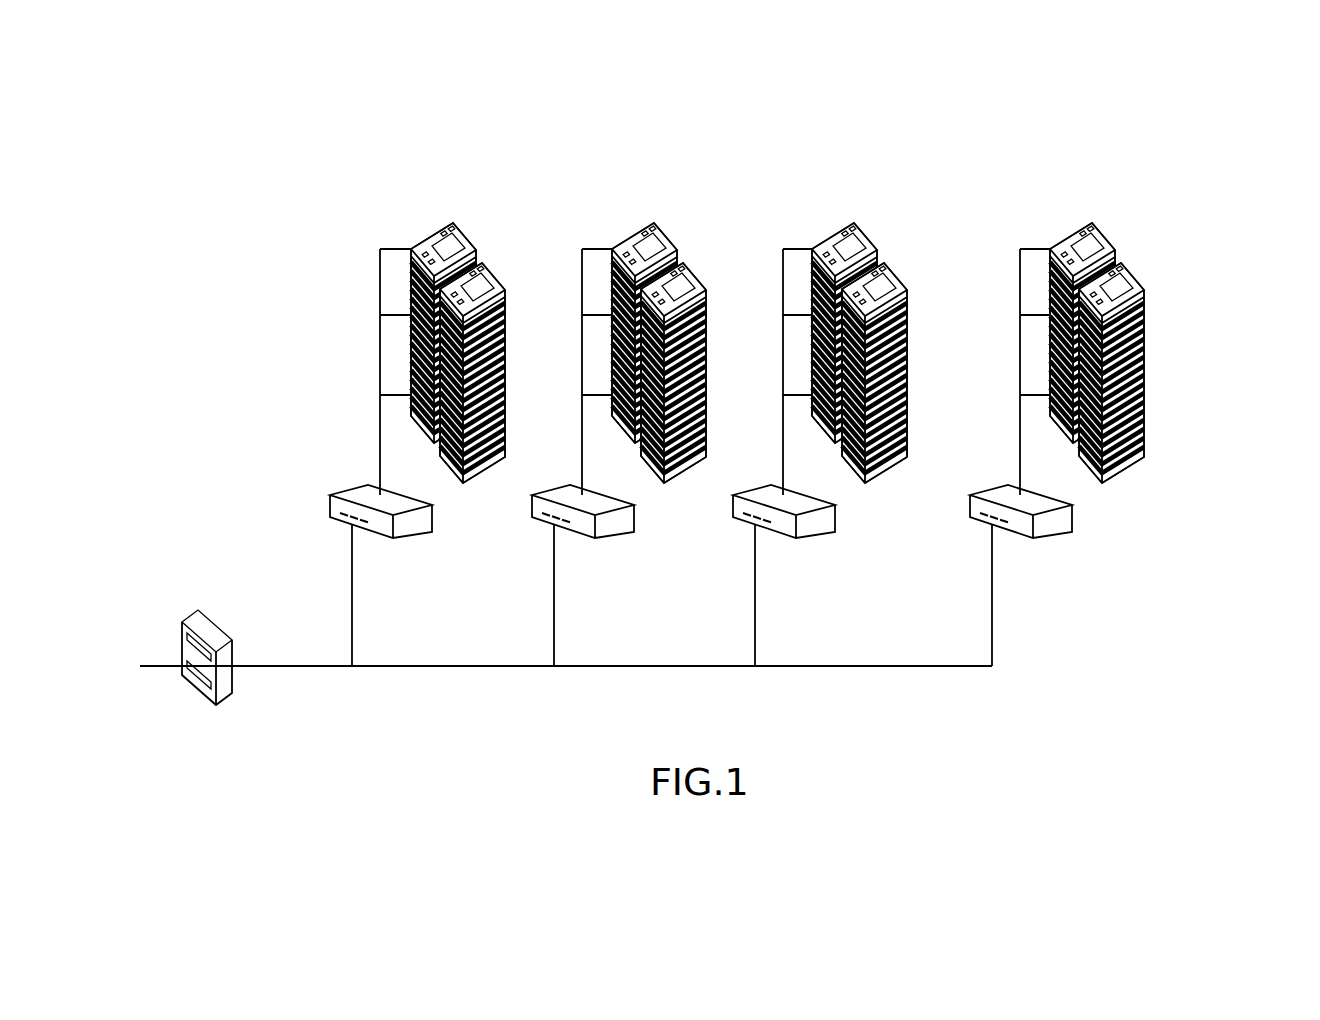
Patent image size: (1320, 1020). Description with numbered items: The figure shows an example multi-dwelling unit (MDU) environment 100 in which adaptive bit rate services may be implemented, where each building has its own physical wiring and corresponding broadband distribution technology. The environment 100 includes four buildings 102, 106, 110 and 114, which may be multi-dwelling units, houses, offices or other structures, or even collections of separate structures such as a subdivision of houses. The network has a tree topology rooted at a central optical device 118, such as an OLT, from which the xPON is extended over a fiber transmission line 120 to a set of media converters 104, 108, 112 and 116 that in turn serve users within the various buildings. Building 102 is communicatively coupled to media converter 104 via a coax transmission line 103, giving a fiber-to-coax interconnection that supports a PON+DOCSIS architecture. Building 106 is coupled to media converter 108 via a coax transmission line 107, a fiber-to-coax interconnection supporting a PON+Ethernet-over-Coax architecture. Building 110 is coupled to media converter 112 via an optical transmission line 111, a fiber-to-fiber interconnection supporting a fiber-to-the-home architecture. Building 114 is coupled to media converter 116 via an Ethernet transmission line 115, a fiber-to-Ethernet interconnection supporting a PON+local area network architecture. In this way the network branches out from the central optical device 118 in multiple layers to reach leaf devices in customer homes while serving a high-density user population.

The MDU environment 100 is at (1152, 132).
The building 102 is at (467, 244).
The coax transmission line 103 is at (380, 317).
The media converter 104 is at (330, 497).
The building 106 is at (668, 242).
The coax transmission line 107 is at (582, 305).
The media converter 108 is at (632, 502).
The building 110 is at (893, 272).
The optical transmission line 111 is at (783, 280).
The media converter 112 is at (833, 504).
The building 114 is at (1132, 279).
The Ethernet transmission line 115 is at (1020, 280).
The media converter 116 is at (1058, 499).
The central optical device 118 is at (232, 634).
The fiber transmission line 120 is at (641, 668).